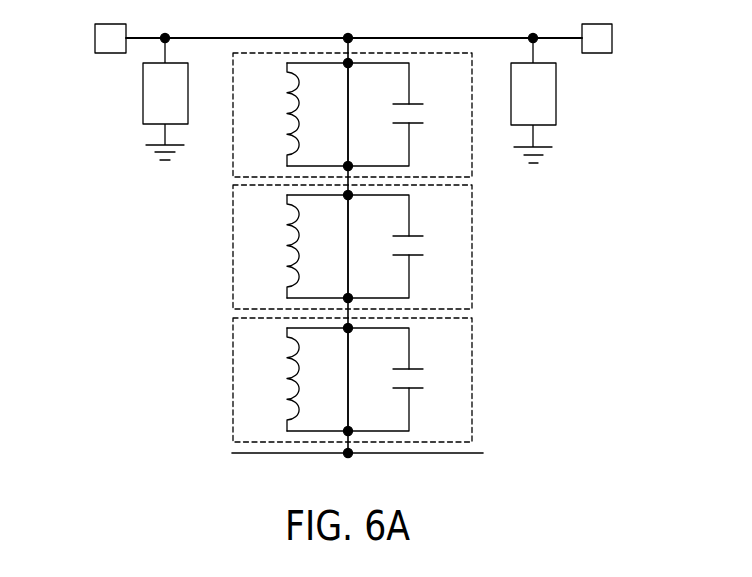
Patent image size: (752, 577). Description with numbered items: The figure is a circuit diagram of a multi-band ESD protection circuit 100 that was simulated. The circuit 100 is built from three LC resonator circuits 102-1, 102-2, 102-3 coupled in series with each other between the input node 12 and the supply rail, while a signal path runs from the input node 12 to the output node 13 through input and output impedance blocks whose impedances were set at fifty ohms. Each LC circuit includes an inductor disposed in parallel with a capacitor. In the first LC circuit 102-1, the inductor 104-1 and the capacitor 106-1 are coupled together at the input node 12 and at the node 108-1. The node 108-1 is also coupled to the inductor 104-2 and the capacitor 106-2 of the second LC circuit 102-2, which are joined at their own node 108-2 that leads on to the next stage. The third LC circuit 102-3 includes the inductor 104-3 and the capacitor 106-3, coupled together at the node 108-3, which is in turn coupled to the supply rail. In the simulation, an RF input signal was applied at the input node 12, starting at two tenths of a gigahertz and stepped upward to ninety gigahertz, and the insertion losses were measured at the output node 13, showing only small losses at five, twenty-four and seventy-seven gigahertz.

The input node 12 is at (95, 38).
The output node 13 is at (612, 38).
The ESD protection circuit 100 is at (356, 243).
The LC resonator circuit 102-1 is at (391, 126).
The LC resonator circuit 102-2 is at (310, 247).
The LC resonator circuit 102-3 is at (310, 380).
The inductor 104-1 is at (290, 113).
The inductor 104-2 is at (290, 245).
The inductor 104-3 is at (290, 378).
The capacitor 106-1 is at (421, 125).
The capacitor 106-2 is at (421, 257).
The capacitor 106-3 is at (421, 390).
The node 108-1 is at (347, 160).
The node 108-2 is at (347, 292).
The node 108-3 is at (347, 425).